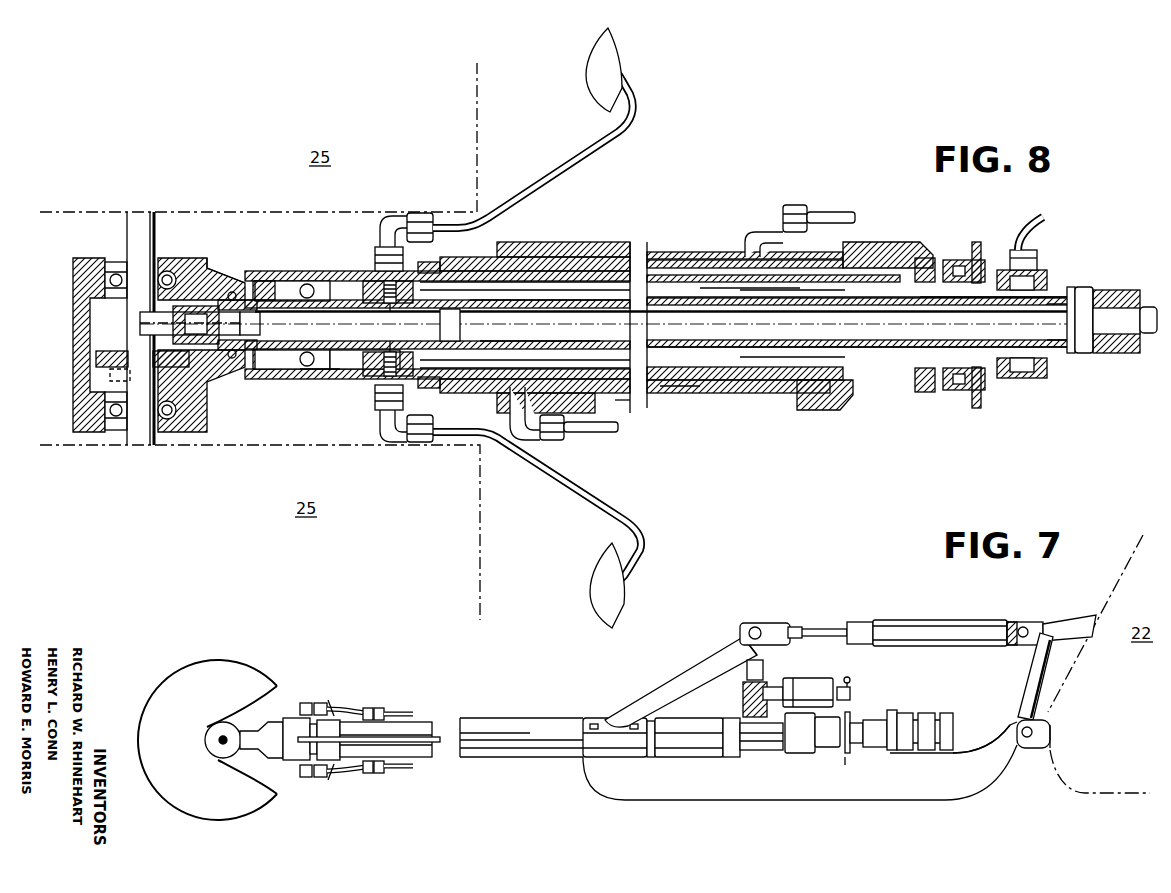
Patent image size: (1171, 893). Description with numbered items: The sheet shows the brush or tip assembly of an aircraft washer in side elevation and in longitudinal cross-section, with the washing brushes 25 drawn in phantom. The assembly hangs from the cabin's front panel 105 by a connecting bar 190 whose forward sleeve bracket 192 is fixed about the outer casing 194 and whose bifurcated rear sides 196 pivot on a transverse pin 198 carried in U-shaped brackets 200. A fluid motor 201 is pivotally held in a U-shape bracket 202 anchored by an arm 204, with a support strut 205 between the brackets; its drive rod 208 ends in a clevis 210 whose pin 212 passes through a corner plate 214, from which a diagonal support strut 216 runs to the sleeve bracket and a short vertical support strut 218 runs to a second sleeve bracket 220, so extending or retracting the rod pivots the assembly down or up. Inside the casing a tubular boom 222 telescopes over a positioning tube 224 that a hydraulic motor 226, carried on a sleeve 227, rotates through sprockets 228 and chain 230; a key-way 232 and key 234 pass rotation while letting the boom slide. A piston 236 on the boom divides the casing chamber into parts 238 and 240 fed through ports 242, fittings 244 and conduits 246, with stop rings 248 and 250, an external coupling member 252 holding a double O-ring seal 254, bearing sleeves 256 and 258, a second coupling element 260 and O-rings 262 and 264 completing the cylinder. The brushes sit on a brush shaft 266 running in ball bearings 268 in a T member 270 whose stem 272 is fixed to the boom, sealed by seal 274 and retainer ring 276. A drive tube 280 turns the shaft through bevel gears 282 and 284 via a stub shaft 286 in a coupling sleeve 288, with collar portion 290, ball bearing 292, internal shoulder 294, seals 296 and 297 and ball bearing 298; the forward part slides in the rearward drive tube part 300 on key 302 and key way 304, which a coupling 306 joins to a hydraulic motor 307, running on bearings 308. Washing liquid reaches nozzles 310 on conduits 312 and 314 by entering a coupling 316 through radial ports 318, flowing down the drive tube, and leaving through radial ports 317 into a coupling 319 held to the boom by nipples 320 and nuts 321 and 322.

In FIG. 7, the washing brushes 25 is at (250, 673).
In FIG. 7, the front panel 105 is at (1124, 580).
In FIG. 7, the connecting bar 190 is at (690, 792).
In FIG. 7, the sleeve bracket 192 is at (572, 721).
In FIG. 8, the outer casing 194 is at (649, 256).
In FIG. 7, the outer casing 194 is at (696, 738).
In FIG. 7, the sides 196 is at (1003, 768).
In FIG. 7, the transverse pin 198 is at (1026, 752).
In FIG. 7, the U-shaped brackets 200 is at (1050, 738).
In FIG. 7, the fluid motor 201 is at (909, 622).
In FIG. 7, the U-shape bracket 202 is at (1035, 624).
In FIG. 7, the arm 204 is at (1073, 623).
In FIG. 7, the support strut 205 is at (1030, 682).
In FIG. 7, the drive rod 208 is at (822, 630).
In FIG. 7, the clevis 210 is at (790, 620).
In FIG. 7, the pin 212 is at (755, 626).
In FIG. 7, the corner plate 214 is at (738, 637).
In FIG. 7, the diagonal support strut 216 is at (689, 676).
In FIG. 7, the vertical support strut 218 is at (766, 679).
In FIG. 7, the second sleeve bracket 220 is at (790, 749).
In FIG. 8, the boom 222 is at (322, 276).
In FIG. 8, the positioning tube 224 is at (610, 276).
In FIG. 7, the hydraulic motor 226 is at (814, 680).
In FIG. 7, the sleeve 227 is at (737, 699).
In FIG. 8, the sprockets 228 is at (990, 232).
In FIG. 7, the sprockets 228 is at (851, 686).
In FIG. 7, the chain 230 is at (855, 713).
In FIG. 8, the key-way 232 is at (741, 304).
In FIG. 8, the key 234 is at (800, 304).
In FIG. 8, the piston 236 is at (698, 263).
In FIG. 8, the chamber part 238 is at (596, 256).
In FIG. 8, the chamber part 240 is at (738, 263).
In FIG. 8, the ports 242 is at (749, 245).
In FIG. 8, the fittings 244 is at (781, 218).
In FIG. 8, the conduits 246 is at (842, 205).
In FIG. 8, the stop ring 248 is at (621, 402).
In FIG. 8, the stop ring 250 is at (753, 394).
In FIG. 8, the external coupling member 252 is at (534, 249).
In FIG. 8, the double O-ring seal 254 is at (447, 261).
In FIG. 8, the bearing sleeve 256 is at (500, 250).
In FIG. 8, the bearing sleeve 258 is at (862, 266).
In FIG. 8, the second coupling element 260 is at (856, 396).
In FIG. 8, the O-ring 262 is at (916, 399).
In FIG. 8, the O-ring 264 is at (695, 397).
In FIG. 8, the brush shaft 266 is at (153, 243).
In FIG. 8, the ball bearings 268 is at (112, 265).
In FIG. 8, the T member 270 is at (77, 338).
In FIG. 8, the stem 272 is at (250, 277).
In FIG. 8, the seal 274 is at (176, 262).
In FIG. 8, the retainer ring 276 is at (218, 266).
In FIG. 8, the drive tube 280 is at (459, 340).
In FIG. 8, the bevel gear 282 is at (150, 317).
In FIG. 8, the bevel gear 284 is at (120, 357).
In FIG. 8, the stub shaft 286 is at (253, 372).
In FIG. 8, the coupling sleeve 288 is at (328, 353).
In FIG. 8, the collar portion 290 is at (236, 362).
In FIG. 8, the ball bearing 292 is at (255, 290).
In FIG. 8, the internal shoulder 294 is at (236, 388).
In FIG. 8, the seal 296 is at (216, 292).
In FIG. 8, the seal 297 is at (330, 312).
In FIG. 8, the ball bearing 298 is at (308, 380).
In FIG. 8, the rearward drive tube part 300 is at (695, 304).
In FIG. 8, the key 302 is at (546, 308).
In FIG. 8, the key way 304 is at (603, 308).
In FIG. 8, the coupling 306 is at (1110, 291).
In FIG. 7, the hydraulic motor 307 is at (958, 700).
In FIG. 8, the bearings 308 is at (470, 308).
In FIG. 8, the nozzles 310 is at (610, 70).
In FIG. 8, the conduit 312 is at (389, 226).
In FIG. 8, the conduit 314 is at (566, 173).
In FIG. 8, the coupling 316 is at (1020, 380).
In FIG. 8, the radial ports 317 is at (393, 313).
In FIG. 8, the radial ports 318 is at (1030, 318).
In FIG. 8, the coupling 319 is at (388, 313).
In FIG. 8, the nipples 320 is at (375, 383).
In FIG. 8, the nut 321 is at (373, 255).
In FIG. 8, the nut 322 is at (375, 276).